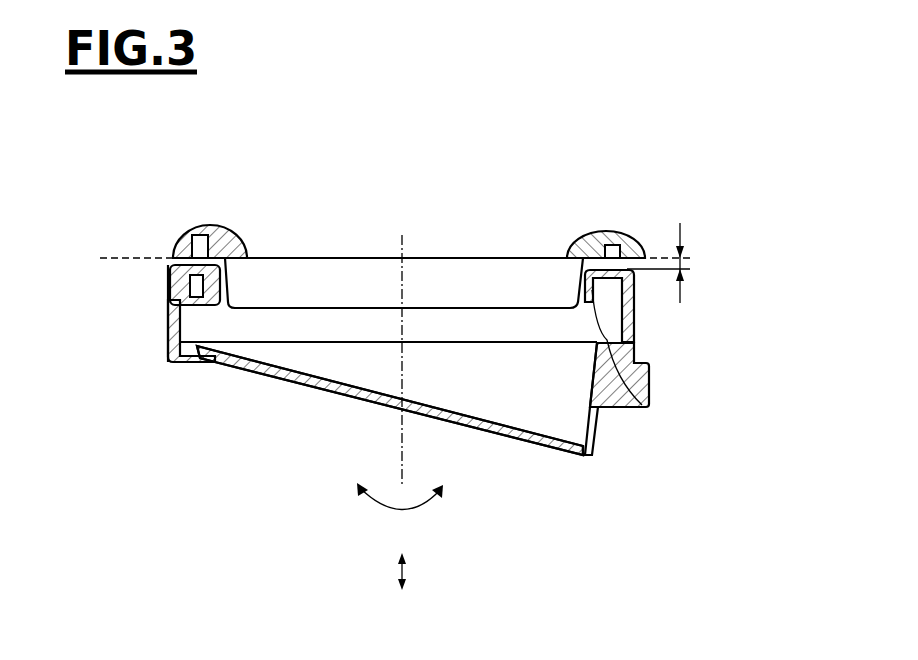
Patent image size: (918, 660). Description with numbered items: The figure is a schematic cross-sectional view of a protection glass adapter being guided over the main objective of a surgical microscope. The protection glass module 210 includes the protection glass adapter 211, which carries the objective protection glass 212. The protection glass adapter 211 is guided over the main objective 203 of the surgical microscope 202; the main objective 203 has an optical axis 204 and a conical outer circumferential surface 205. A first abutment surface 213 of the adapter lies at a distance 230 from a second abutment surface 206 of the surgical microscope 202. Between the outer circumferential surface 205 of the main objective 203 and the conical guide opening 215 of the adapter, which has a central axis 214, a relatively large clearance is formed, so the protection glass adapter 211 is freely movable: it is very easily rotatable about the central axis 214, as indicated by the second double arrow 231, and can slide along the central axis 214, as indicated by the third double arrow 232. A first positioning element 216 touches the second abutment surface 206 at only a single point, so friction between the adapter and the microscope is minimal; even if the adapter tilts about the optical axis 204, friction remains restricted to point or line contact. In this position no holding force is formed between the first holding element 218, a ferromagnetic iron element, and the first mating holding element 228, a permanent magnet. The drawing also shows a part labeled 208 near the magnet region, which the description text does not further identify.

The surgical microscope 202 is at (603, 114).
The main objective 203 is at (545, 268).
The optical axis 204 is at (400, 466).
The conical outer circumferential surface 205 is at (648, 405).
The second abutment surface 206 is at (178, 262).
The right dome bearing 208 is at (625, 243).
The protection glass module 210 is at (190, 411).
The protection glass adapter 211 is at (592, 288).
The objective protection glass 212 is at (540, 450).
The first abutment surface 213 is at (186, 268).
The central axis 214 is at (390, 400).
The conical guide opening 215 is at (596, 300).
The first positioning element 216 is at (636, 270).
The first holding element 218 is at (172, 278).
The first mating holding element 228 is at (192, 248).
The distance 230 is at (690, 266).
The second double arrow 231 is at (372, 505).
The third double arrow 232 is at (400, 568).